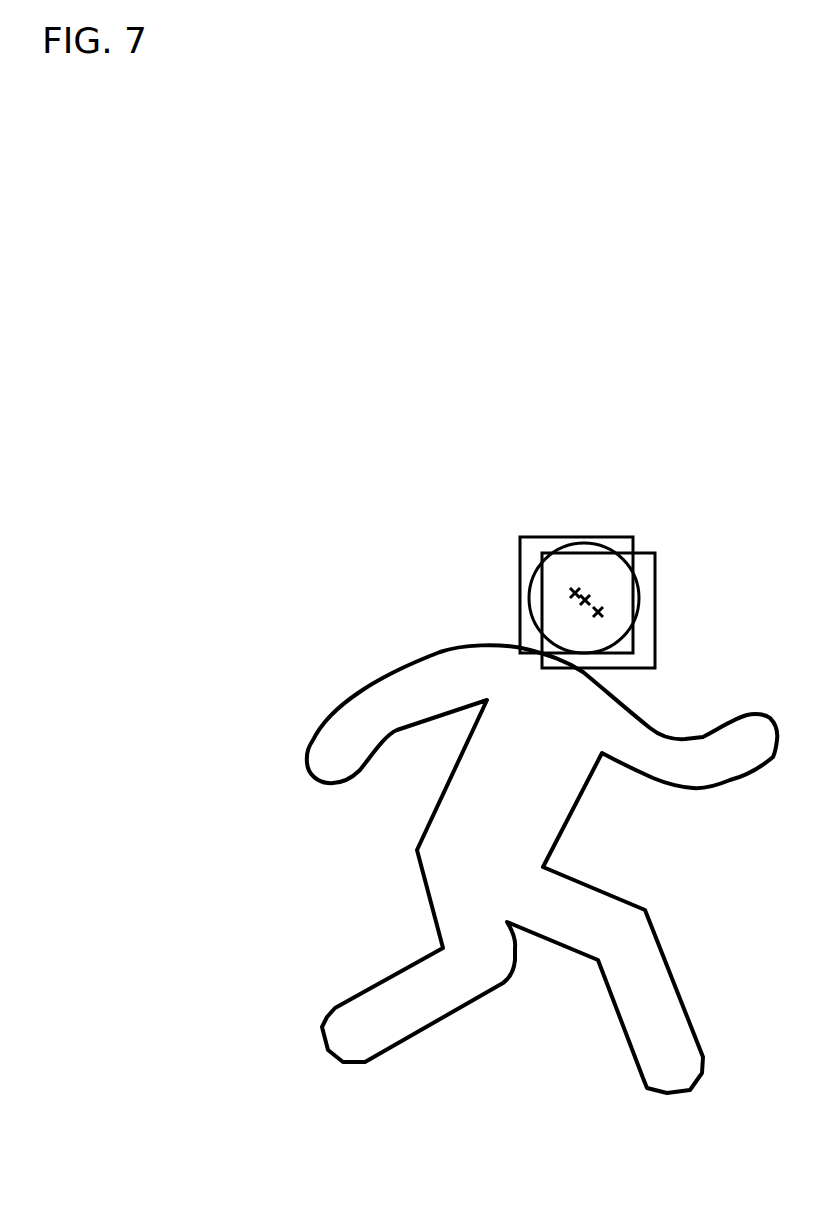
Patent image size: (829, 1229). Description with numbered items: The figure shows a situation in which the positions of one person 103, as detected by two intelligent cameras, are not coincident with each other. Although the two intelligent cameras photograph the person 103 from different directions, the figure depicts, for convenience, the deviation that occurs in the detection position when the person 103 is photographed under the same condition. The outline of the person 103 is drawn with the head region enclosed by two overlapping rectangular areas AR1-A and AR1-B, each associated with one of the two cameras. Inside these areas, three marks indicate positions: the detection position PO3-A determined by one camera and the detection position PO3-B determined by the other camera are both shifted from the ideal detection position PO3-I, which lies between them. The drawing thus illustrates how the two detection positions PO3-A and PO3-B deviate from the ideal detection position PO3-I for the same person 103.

The person 103 is at (388, 678).
The first detection area AR1-A is at (597, 537).
The second detection area AR1-B is at (657, 577).
The detection position PO3-A is at (570, 595).
The ideal detection position PO3-I is at (593, 597).
The detection position PO3-B is at (607, 610).